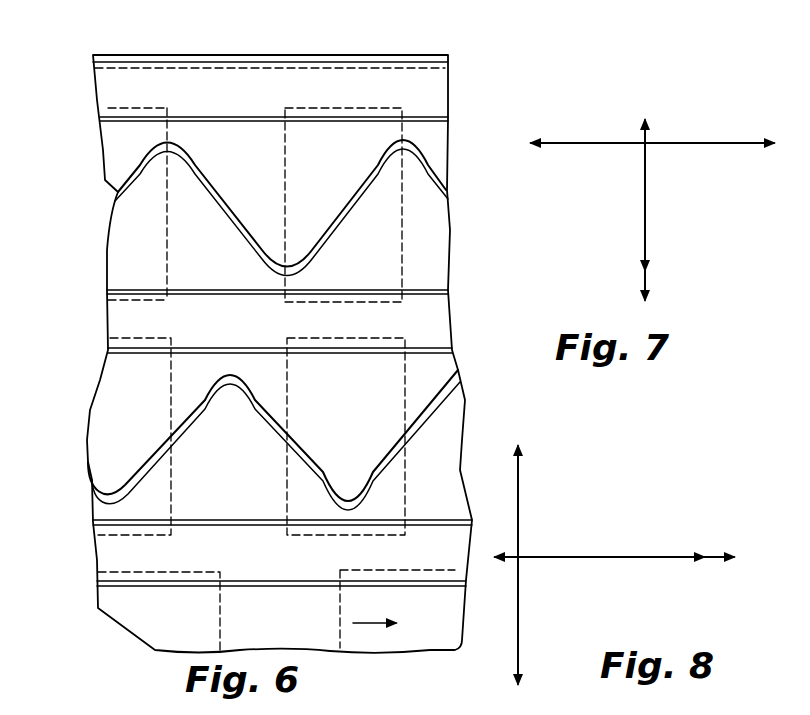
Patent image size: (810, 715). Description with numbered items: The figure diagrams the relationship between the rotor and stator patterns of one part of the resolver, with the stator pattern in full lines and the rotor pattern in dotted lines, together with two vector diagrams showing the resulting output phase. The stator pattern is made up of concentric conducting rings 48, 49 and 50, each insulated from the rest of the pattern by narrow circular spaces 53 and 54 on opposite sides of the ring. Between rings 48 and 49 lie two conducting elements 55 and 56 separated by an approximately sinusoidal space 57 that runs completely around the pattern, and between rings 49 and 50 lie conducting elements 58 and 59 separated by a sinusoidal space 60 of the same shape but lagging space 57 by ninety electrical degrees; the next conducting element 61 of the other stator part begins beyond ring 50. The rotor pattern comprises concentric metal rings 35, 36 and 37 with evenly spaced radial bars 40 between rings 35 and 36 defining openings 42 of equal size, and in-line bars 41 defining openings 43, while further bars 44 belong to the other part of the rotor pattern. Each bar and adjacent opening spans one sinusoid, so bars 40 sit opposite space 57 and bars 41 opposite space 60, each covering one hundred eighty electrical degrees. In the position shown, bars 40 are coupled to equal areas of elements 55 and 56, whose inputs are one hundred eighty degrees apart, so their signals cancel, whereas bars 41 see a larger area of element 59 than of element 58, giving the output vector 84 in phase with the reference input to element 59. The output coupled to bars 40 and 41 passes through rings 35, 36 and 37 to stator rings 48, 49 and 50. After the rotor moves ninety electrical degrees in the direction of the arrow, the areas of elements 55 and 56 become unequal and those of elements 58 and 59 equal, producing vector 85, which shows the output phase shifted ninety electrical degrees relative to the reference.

In FIG. 6, the metal ring 35 is at (150, 108).
In FIG. 6, the metal ring 36 is at (143, 338).
In FIG. 6, the metal ring 37 is at (172, 568).
In FIG. 6, the radial bars 40 is at (240, 147).
In FIG. 6, the radial bars 41 is at (205, 490).
In FIG. 6, the openings 42 is at (135, 243).
In FIG. 6, the openings 43 is at (380, 383).
In FIG. 6, the radial bars 44 is at (230, 612).
In FIG. 6, the conducting ring 48 is at (455, 84).
In FIG. 6, the conducting ring 49 is at (447, 316).
In FIG. 6, the conducting ring 50 is at (462, 558).
In FIG. 6, the circular space 53 is at (405, 58).
In FIG. 6, the circular space 54 is at (446, 118).
In FIG. 6, the conducting element 55 is at (447, 150).
In FIG. 7, the conducting element 55 is at (752, 140).
In FIG. 8, the conducting element 55 is at (715, 565).
In FIG. 6, the conducting element 56 is at (440, 222).
In FIG. 7, the conducting element 56 is at (560, 138).
In FIG. 8, the conducting element 56 is at (522, 555).
In FIG. 6, the sinusoidal space 57 is at (352, 190).
In FIG. 6, the conducting element 58 is at (450, 372).
In FIG. 7, the conducting element 58 is at (650, 128).
In FIG. 8, the conducting element 58 is at (520, 520).
In FIG. 6, the conducting element 59 is at (455, 456).
In FIG. 7, the conducting element 59 is at (650, 282).
In FIG. 8, the conducting element 59 is at (520, 650).
In FIG. 6, the sinusoidal space 60 is at (312, 468).
In FIG. 6, the conducting element 61 is at (460, 648).
In FIG. 7, the vector 84 is at (650, 268).
In FIG. 8, the vector 85 is at (705, 553).